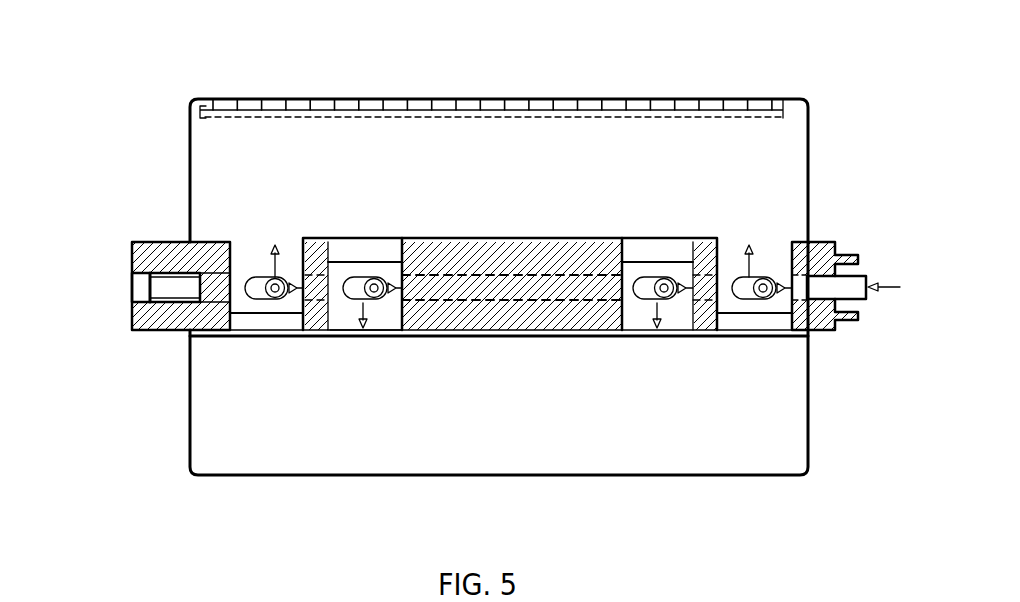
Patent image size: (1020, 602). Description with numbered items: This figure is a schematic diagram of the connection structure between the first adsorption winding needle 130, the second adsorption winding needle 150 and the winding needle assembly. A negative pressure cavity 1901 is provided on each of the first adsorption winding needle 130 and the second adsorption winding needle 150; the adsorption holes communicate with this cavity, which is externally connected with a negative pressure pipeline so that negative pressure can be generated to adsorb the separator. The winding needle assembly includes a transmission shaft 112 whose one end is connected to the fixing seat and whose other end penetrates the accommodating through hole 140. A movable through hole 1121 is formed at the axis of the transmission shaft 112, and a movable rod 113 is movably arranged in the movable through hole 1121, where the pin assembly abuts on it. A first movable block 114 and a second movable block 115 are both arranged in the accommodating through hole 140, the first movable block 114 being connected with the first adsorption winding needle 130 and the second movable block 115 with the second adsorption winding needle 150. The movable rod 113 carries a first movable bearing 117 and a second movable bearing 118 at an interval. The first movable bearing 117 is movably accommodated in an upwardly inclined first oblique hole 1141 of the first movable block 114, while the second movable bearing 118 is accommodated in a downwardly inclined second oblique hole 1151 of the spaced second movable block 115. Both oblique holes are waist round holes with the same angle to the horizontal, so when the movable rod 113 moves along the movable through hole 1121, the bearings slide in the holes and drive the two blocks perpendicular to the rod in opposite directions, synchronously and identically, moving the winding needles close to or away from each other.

The transmission shaft 112 is at (163, 245).
The movable rod 113 is at (190, 292).
The first movable block 114 is at (252, 250).
The first oblique hole 1141 is at (250, 292).
The first movable bearing 117 is at (275, 300).
The second oblique hole 1151 is at (352, 278).
The second movable bearing 118 is at (372, 283).
The second movable block 115 is at (390, 320).
The movable through hole 1121 is at (582, 292).
The first adsorption winding needle 130 is at (495, 158).
The accommodating through hole 140 is at (687, 255).
The second adsorption winding needle 150 is at (560, 455).
The negative pressure cavity 1901 is at (243, 115).